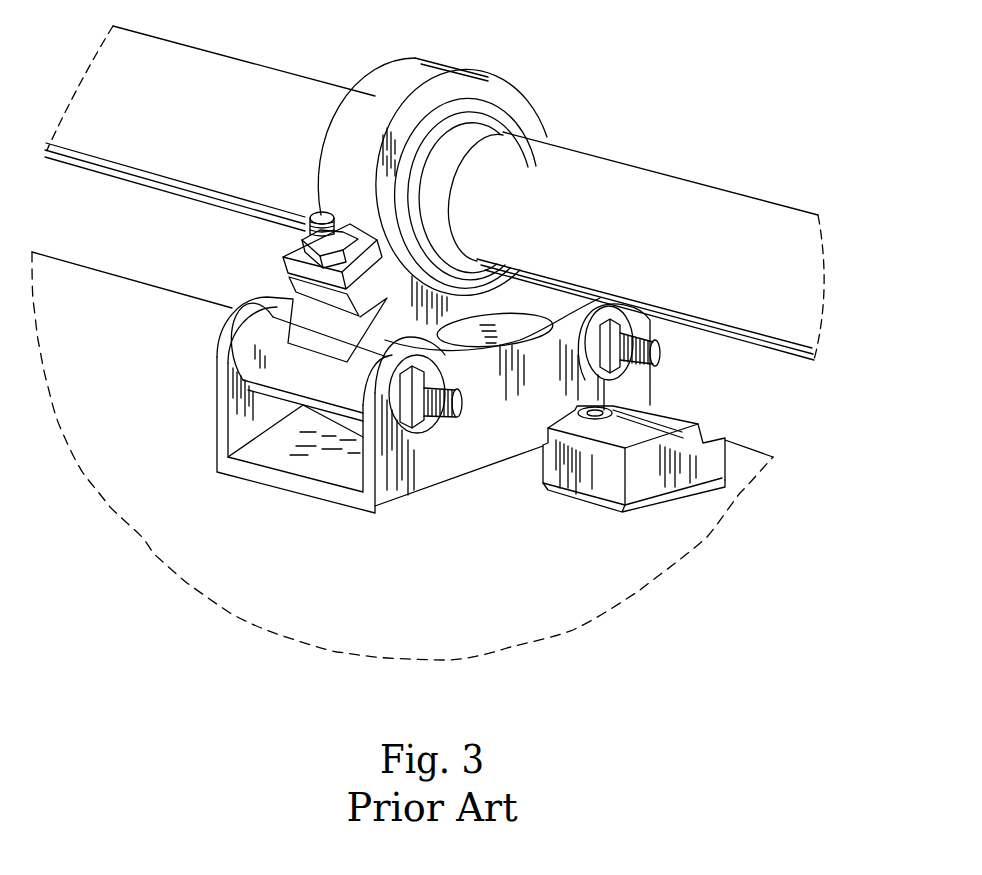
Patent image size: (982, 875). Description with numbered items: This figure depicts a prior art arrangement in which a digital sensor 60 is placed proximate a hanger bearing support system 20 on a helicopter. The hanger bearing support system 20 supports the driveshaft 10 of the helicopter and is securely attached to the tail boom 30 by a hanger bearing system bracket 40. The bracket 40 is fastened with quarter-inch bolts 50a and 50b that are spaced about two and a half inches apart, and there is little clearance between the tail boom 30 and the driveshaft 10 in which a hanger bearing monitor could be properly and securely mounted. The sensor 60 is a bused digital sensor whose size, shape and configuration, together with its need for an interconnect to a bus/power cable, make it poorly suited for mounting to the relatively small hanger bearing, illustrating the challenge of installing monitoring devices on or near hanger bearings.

The driveshaft 10 is at (588, 154).
The hanger bearing support system 20 is at (381, 74).
The tail boom 30 is at (755, 445).
The hanger bearing system bracket 40 is at (282, 500).
The bolt 50a is at (661, 362).
The bolt 50b is at (441, 419).
The sensor 60 is at (587, 497).